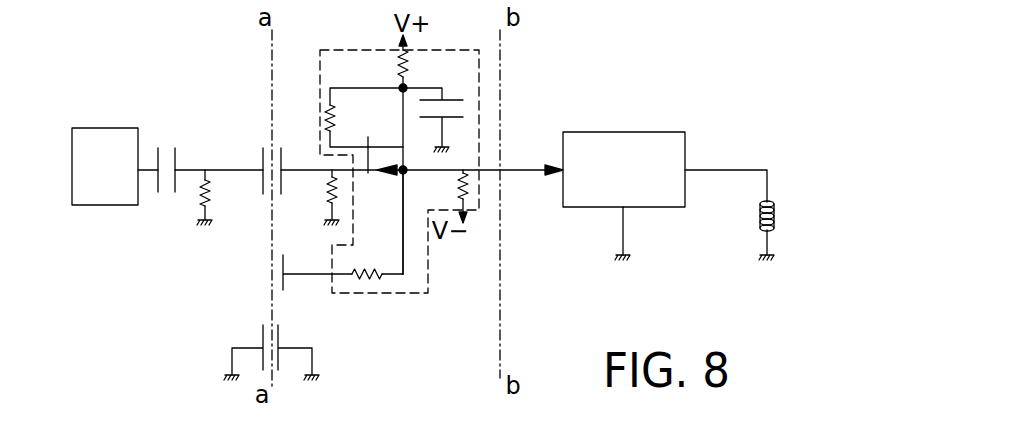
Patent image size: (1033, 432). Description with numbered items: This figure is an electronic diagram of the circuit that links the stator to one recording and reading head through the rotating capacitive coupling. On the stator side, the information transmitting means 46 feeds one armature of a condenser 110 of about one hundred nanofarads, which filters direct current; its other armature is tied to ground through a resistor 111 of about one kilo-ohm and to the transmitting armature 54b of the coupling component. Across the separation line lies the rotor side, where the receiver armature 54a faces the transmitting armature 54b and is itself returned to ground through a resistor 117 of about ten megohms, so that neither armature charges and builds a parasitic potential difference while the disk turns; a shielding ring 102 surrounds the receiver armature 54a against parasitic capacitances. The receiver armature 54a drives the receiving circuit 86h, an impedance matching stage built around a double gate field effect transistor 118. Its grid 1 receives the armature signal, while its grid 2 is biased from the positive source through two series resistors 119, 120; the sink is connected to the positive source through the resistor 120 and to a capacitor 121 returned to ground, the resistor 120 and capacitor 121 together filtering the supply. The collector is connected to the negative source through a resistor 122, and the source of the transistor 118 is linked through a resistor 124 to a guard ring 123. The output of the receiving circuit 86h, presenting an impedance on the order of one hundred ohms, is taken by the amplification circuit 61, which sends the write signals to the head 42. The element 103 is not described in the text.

The information transmitting means 46 is at (118, 186).
The condenser 110 is at (168, 148).
The resistor 111 is at (200, 204).
The transmitting armature 54b is at (260, 150).
The receiver armature 54a is at (283, 148).
The resistor 117 is at (326, 193).
The receiving circuit 86h is at (313, 62).
The resistor 119 is at (333, 125).
The resistor 120 is at (407, 72).
The capacitor 121 is at (462, 100).
The resistor 122 is at (468, 176).
The double gate field effect transistor 118 is at (376, 176).
The guard ring 123 is at (283, 289).
The resistor 124 is at (360, 277).
The capacitor plate 103 is at (258, 338).
The shielding ring 102 is at (280, 368).
The amplification circuit 61 is at (604, 186).
The head 42 is at (777, 217).
The grid 1 is at (367, 175).
The grid 2 is at (366, 129).